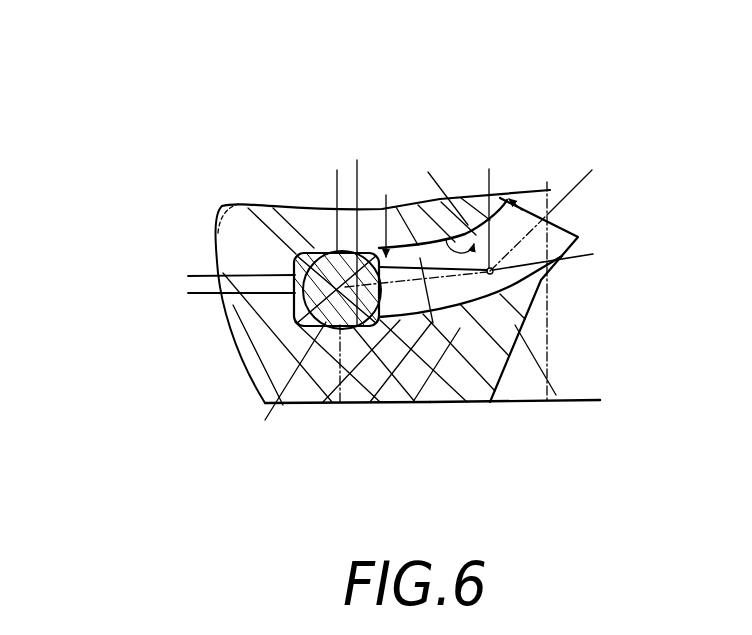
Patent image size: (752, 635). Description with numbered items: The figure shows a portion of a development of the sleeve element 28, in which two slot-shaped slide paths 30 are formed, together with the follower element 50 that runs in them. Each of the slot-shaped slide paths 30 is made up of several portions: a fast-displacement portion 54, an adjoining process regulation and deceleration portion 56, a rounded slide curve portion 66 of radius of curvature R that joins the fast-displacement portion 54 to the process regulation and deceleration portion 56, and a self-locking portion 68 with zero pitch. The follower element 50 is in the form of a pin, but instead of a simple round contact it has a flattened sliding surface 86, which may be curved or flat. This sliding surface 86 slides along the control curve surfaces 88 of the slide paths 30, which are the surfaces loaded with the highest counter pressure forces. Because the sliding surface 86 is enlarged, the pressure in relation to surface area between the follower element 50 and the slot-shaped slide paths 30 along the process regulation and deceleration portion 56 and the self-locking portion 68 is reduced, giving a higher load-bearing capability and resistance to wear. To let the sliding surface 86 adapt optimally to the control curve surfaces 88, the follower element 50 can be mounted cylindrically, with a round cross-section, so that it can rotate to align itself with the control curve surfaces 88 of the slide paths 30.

The sleeve element 28 is at (557, 400).
The slot-shaped slide paths 30 is at (233, 236).
The follower element 50 is at (297, 310).
The fast-displacement portion 54 is at (264, 219).
The process regulation and deceleration portion 56 is at (375, 240).
The rounded slide curve portion 66 is at (420, 256).
The self-locking portion 68 is at (293, 312).
The sliding surface 86 is at (378, 405).
The control curve surfaces 88 is at (317, 246).